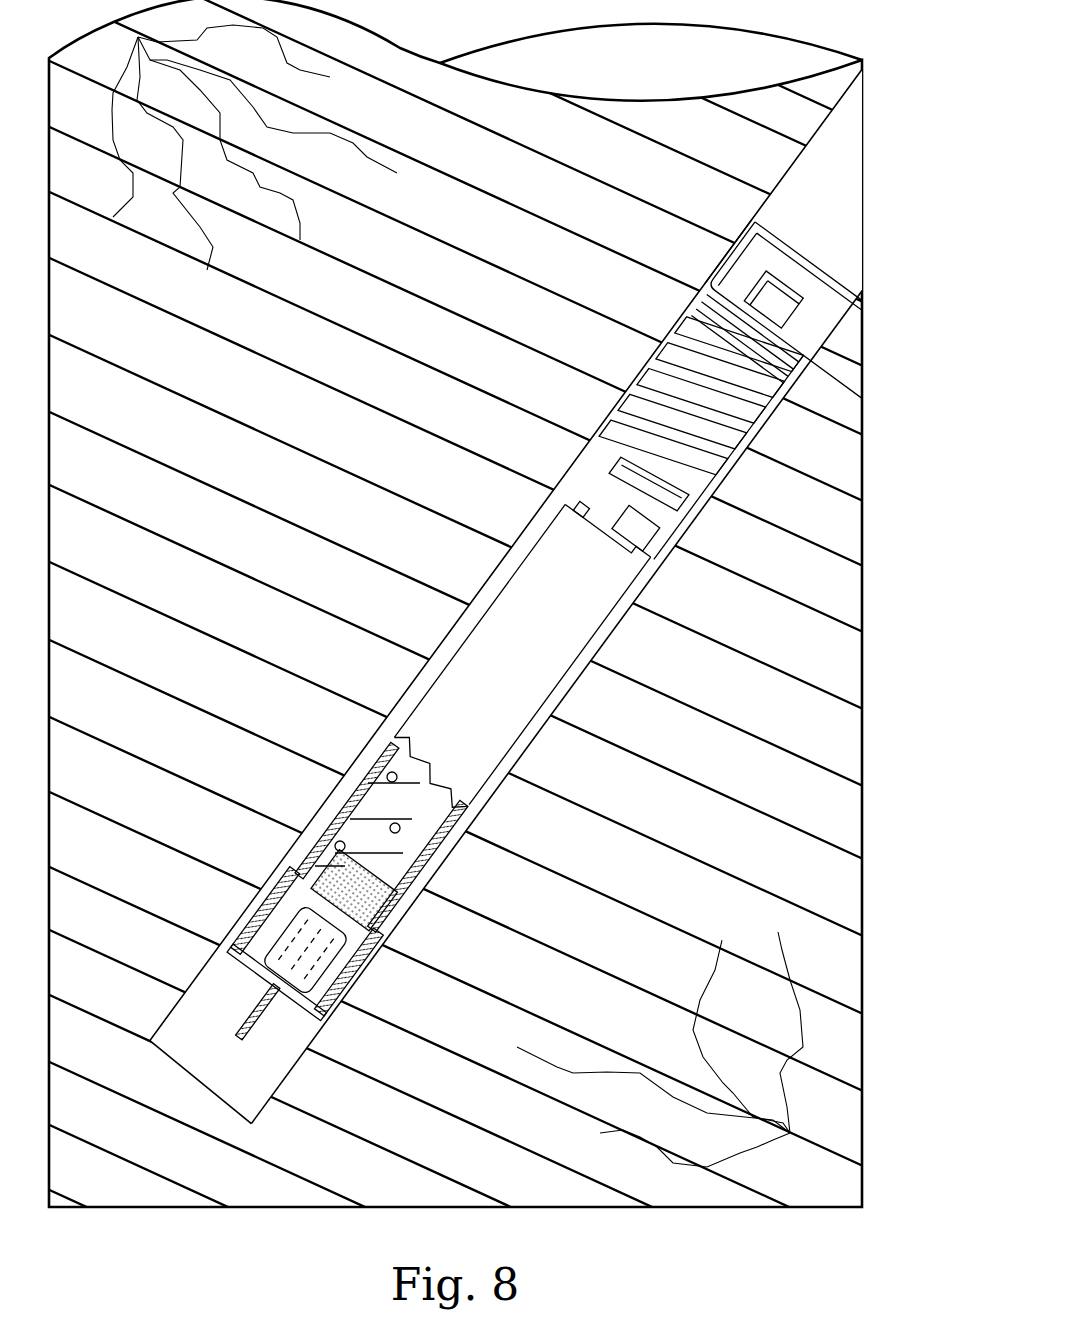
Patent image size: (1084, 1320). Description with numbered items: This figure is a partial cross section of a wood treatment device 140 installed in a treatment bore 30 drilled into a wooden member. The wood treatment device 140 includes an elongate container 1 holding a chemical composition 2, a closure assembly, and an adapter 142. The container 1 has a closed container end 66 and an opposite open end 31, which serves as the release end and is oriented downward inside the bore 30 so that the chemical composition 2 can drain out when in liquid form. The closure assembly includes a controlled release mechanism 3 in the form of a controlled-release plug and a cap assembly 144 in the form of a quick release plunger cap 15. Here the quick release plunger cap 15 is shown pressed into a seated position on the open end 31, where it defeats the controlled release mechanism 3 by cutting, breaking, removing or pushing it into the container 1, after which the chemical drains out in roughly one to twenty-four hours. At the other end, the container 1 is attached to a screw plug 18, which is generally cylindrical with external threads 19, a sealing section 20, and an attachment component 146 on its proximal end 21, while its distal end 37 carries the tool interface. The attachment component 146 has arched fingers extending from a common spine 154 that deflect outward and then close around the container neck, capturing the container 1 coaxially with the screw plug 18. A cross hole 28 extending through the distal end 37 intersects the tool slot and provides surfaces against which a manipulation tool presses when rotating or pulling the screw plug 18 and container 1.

The bore 30 is at (822, 168).
The distal end 37 is at (815, 262).
The cross hole 28 is at (780, 304).
The screw plug 18 is at (812, 334).
The sealing section 20 is at (803, 383).
The external threads 19 is at (740, 460).
The container end 66 is at (690, 512).
The proximal end 21 is at (640, 520).
The adapter 142 is at (618, 358).
The attachment component 146 is at (572, 480).
The common spine 154 is at (588, 498).
The wood treatment device 140 is at (460, 568).
The chemical composition 2 is at (390, 793).
The container 1 is at (335, 807).
The controlled release mechanism 3 is at (335, 882).
The open end 31 is at (250, 955).
The quick release plunger cap 15 is at (232, 1030).
The cap assembly 144 is at (283, 1022).